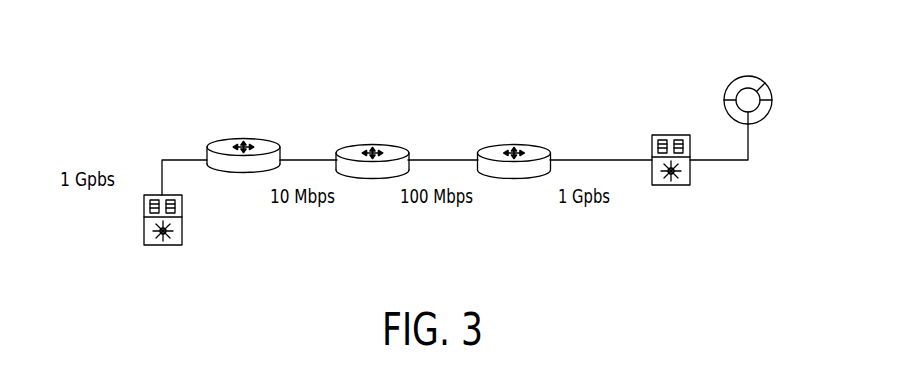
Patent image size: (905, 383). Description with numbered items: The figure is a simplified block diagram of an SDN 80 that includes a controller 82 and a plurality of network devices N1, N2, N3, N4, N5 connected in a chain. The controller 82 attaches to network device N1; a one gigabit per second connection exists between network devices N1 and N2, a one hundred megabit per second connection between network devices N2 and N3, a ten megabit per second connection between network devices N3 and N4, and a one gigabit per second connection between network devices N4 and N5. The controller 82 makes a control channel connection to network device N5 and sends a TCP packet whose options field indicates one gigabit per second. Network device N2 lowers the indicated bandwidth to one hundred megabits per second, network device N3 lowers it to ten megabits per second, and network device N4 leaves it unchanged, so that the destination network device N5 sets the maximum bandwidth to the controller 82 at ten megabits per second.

The SDN 80 is at (190, 79).
The controller 82 is at (762, 80).
The network device N1 is at (673, 134).
The network device N2 is at (513, 145).
The network device N3 is at (377, 146).
The network device N4 is at (247, 140).
The network device N5 is at (182, 217).